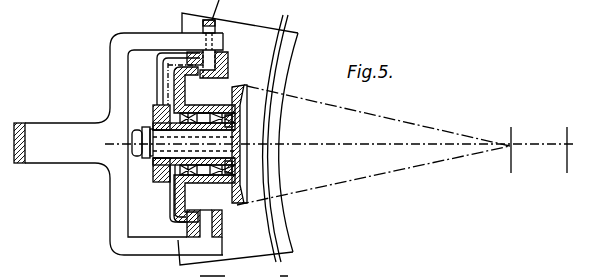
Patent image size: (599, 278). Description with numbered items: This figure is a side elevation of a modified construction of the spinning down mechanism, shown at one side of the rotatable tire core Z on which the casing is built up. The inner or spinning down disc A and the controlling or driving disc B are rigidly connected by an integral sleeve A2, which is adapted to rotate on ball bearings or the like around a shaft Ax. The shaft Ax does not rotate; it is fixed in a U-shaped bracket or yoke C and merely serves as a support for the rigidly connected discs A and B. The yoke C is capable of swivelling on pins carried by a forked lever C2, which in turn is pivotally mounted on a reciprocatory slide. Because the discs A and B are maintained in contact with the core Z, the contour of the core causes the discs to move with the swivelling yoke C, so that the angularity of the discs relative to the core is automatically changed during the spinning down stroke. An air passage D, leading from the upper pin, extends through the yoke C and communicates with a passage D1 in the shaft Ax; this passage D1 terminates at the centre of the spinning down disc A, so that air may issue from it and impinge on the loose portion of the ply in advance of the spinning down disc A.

The air passage D is at (146, 50).
The forked lever C2 is at (50, 140).
The inner or spinning down disc A is at (243, 88).
The shaft Ax is at (204, 135).
The integral sleeve A2 is at (188, 206).
The passage D1 is at (247, 140).
The rotatable tire core Z is at (246, 139).
The U-shaped bracket or yoke C is at (160, 190).
The controlling or driving disc B is at (168, 207).